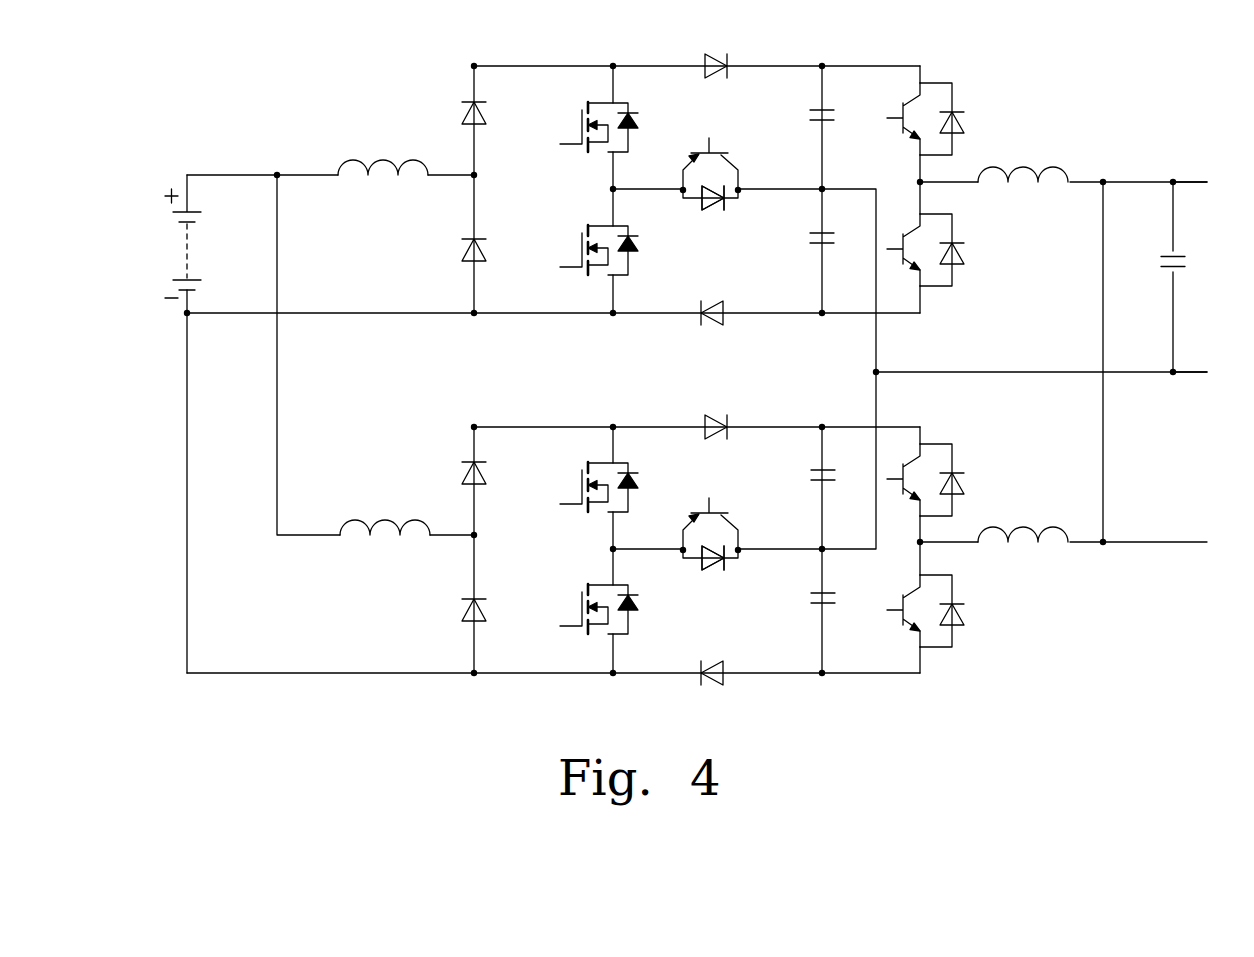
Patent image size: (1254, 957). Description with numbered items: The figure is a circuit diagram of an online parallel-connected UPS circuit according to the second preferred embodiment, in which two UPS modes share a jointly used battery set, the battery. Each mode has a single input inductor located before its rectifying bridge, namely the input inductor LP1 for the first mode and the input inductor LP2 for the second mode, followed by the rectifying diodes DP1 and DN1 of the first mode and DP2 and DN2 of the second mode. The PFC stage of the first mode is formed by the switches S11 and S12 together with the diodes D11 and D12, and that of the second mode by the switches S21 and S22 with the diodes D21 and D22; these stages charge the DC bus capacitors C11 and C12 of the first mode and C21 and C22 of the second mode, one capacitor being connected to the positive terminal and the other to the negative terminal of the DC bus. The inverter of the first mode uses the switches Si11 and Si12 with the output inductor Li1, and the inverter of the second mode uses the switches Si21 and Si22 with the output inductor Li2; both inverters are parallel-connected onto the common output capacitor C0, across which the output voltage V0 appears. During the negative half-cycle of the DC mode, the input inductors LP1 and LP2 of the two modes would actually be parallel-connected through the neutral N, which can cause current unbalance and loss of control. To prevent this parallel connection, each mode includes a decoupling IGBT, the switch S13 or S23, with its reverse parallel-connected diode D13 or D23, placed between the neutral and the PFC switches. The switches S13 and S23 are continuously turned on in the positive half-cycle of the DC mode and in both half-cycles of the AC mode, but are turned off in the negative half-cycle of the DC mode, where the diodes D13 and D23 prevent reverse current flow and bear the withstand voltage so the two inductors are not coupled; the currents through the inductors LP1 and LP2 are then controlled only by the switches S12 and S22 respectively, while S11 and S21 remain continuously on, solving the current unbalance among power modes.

The battery set battery is at (143, 236).
The input inductor LP1 is at (383, 150).
The input inductor LP2 is at (385, 509).
The diode DP1 is at (452, 113).
The diode DN1 is at (452, 252).
The diode DP2 is at (449, 472).
The diode DN2 is at (449, 612).
The switch S11 is at (582, 127).
The switch S12 is at (582, 250).
The switch S21 is at (582, 487).
The switch S22 is at (582, 609).
The decoupling switch S13 is at (719, 160).
The decoupling switch S23 is at (717, 521).
The diode D11 is at (718, 48).
The diode D12 is at (722, 332).
The reverse parallel-connected diode D13 is at (721, 219).
The diode D21 is at (718, 409).
The diode D22 is at (731, 691).
The reverse parallel-connected diode D23 is at (716, 580).
The capacitor C11 is at (803, 133).
The capacitor C12 is at (802, 258).
The capacitor C21 is at (804, 493).
The capacitor C22 is at (803, 618).
The inverter switch Si11 is at (953, 119).
The inverter switch Si12 is at (952, 250).
The inverter switch Si21 is at (956, 480).
The inverter switch Si22 is at (956, 611).
The inductor Li1 is at (1023, 196).
The inductor Li2 is at (1023, 554).
The capacitor C0 is at (1156, 277).
The output voltage V0 is at (1195, 277).
The neutral N is at (1040, 355).